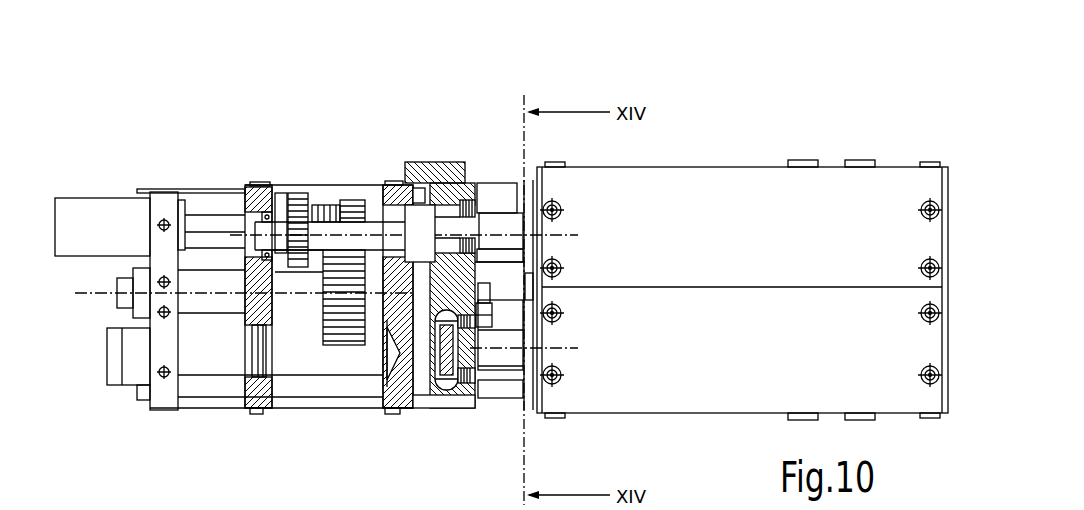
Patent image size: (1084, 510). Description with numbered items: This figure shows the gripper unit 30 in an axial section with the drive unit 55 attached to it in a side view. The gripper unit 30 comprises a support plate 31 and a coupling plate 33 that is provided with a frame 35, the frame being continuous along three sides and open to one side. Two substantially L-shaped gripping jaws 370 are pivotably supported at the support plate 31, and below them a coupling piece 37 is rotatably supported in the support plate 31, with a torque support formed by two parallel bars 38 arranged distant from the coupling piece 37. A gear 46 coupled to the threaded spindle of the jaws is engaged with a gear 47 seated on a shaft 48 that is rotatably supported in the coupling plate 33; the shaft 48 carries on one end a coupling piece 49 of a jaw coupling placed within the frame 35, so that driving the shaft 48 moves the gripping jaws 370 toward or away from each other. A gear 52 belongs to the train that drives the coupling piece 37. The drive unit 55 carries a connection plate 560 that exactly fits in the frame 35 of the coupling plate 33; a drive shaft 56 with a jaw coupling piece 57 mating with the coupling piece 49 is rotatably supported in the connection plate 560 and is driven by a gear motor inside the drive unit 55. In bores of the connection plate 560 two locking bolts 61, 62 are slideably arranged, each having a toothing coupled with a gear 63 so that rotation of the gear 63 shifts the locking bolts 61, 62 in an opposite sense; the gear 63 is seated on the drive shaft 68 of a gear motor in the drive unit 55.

The gripper unit 30 is at (203, 158).
The support plate 31 is at (162, 205).
The coupling plate 33 is at (385, 410).
The frame 35 is at (452, 178).
The coupling piece 37 is at (125, 289).
The bars 38 is at (115, 378).
The gripping jaws 370 is at (75, 207).
The gear 46 is at (308, 192).
The gear 47 is at (278, 186).
The shaft 48 is at (328, 232).
The coupling piece 49 is at (413, 162).
The gear 52 is at (355, 200).
The drive unit 55 is at (722, 163).
The drive shaft 56 is at (500, 222).
The jaw coupling piece 57 is at (470, 180).
The locking bolt 61 is at (462, 345).
The locking bolt 62 is at (446, 405).
The gear 63 is at (447, 350).
The drive shaft 68 is at (498, 356).
The connection plate 560 is at (463, 407).